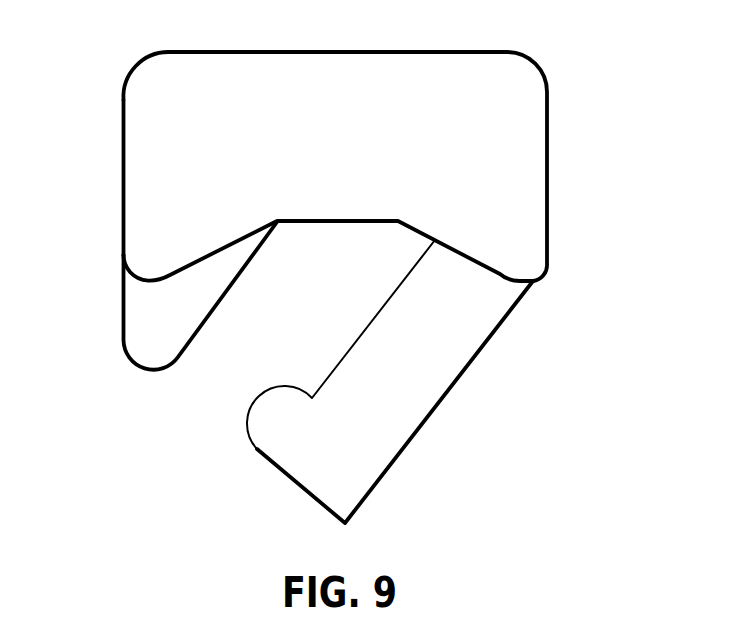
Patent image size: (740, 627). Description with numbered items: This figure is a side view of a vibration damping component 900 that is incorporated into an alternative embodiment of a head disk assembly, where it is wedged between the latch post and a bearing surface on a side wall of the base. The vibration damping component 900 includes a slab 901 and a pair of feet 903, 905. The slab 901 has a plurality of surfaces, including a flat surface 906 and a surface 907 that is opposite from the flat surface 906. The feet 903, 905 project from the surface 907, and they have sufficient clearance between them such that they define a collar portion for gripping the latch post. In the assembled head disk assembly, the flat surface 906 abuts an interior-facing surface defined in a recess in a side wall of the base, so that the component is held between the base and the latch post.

The vibration damping component 900 is at (335, 265).
The slab 901 is at (528, 157).
The foot 903 is at (147, 345).
The foot 905 is at (325, 480).
The flat surface 906 is at (422, 52).
The surface 907 is at (355, 223).